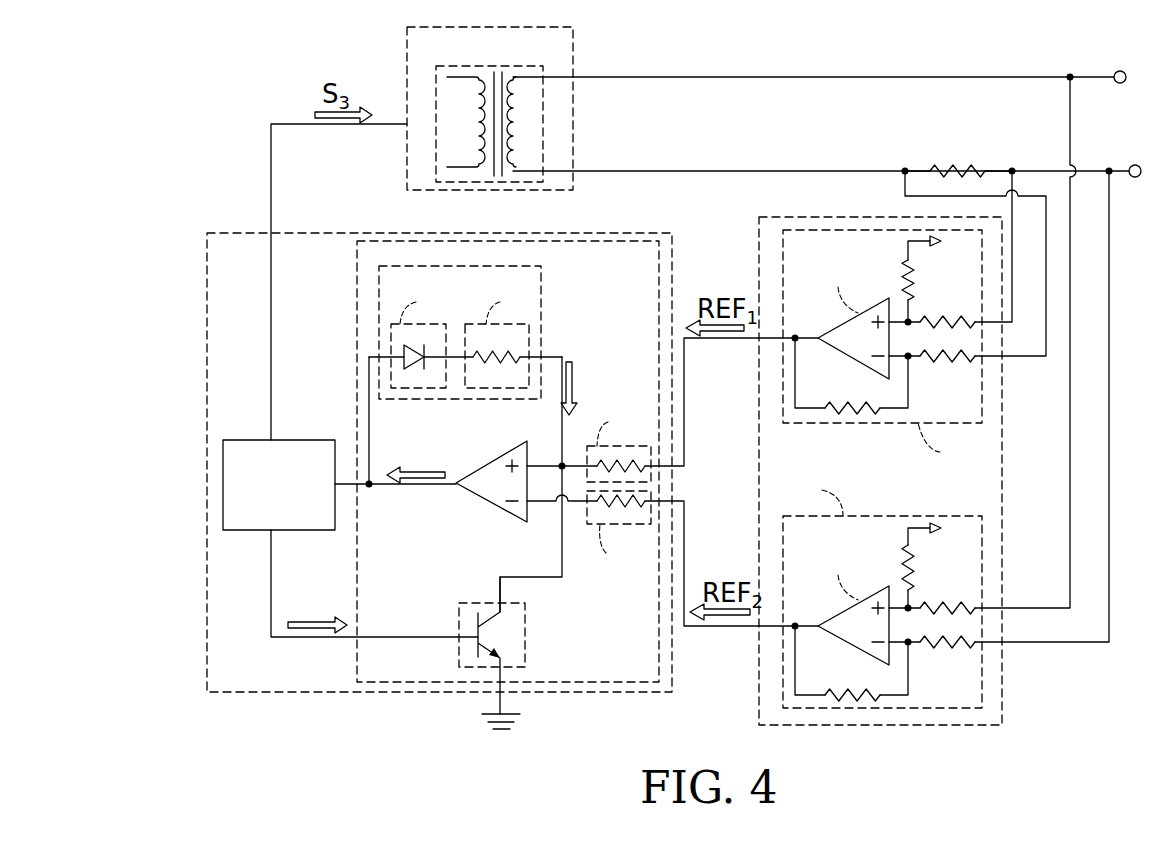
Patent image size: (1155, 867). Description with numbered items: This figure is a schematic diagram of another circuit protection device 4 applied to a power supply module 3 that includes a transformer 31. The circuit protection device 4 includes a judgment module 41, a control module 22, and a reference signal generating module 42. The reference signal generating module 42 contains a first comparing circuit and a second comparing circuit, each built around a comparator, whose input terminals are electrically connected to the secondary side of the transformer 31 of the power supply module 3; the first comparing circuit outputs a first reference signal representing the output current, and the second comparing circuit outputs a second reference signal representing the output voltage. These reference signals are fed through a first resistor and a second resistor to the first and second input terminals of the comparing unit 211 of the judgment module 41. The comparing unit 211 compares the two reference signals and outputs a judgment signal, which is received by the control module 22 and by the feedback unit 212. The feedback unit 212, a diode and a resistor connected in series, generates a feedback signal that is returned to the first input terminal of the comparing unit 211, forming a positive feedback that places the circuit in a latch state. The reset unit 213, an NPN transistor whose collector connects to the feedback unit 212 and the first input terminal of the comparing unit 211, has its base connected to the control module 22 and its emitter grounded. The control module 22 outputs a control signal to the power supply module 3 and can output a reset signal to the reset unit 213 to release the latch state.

The power supply module 3 is at (518, 108).
The transformer 31 is at (483, 66).
The circuit protection device 4 is at (223, 233).
The judgment module 41 is at (357, 343).
The reference signal generating module 42 is at (759, 262).
The control module 22 is at (293, 440).
The comparing unit 211 is at (487, 465).
The feedback unit 212 is at (541, 275).
The reset unit 213 is at (483, 603).